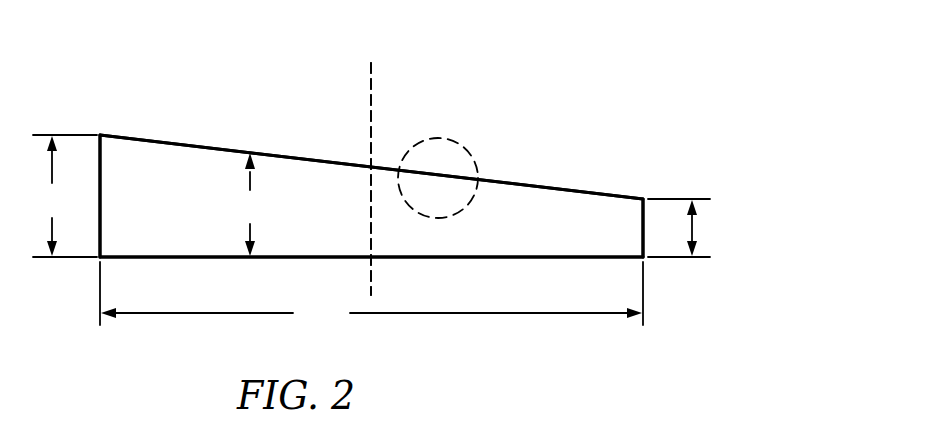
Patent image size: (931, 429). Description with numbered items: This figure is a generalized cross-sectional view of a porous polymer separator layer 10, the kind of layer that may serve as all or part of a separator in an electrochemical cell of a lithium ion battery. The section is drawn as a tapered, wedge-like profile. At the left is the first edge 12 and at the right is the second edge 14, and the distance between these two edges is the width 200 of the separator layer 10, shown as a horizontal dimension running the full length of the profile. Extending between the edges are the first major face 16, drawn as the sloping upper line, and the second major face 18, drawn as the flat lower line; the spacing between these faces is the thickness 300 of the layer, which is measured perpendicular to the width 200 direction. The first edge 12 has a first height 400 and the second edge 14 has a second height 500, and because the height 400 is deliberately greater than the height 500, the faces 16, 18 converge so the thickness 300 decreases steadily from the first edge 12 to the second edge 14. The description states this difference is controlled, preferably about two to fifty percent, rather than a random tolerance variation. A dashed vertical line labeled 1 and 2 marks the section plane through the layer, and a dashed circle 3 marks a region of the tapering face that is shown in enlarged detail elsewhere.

The porous polymer separator layer 10 is at (138, 84).
The first edge 12 is at (98, 160).
The second edge 14 is at (645, 233).
The first major face 16 is at (162, 140).
The second major face 18 is at (133, 259).
The detail region (FIG. 3) 3 is at (463, 143).
The first section portion 1 is at (360, 101).
The second section portion 2 is at (398, 101).
The first height 400 is at (72, 214).
The thickness 300 is at (270, 222).
The second height 500 is at (694, 230).
The width 200 is at (343, 327).